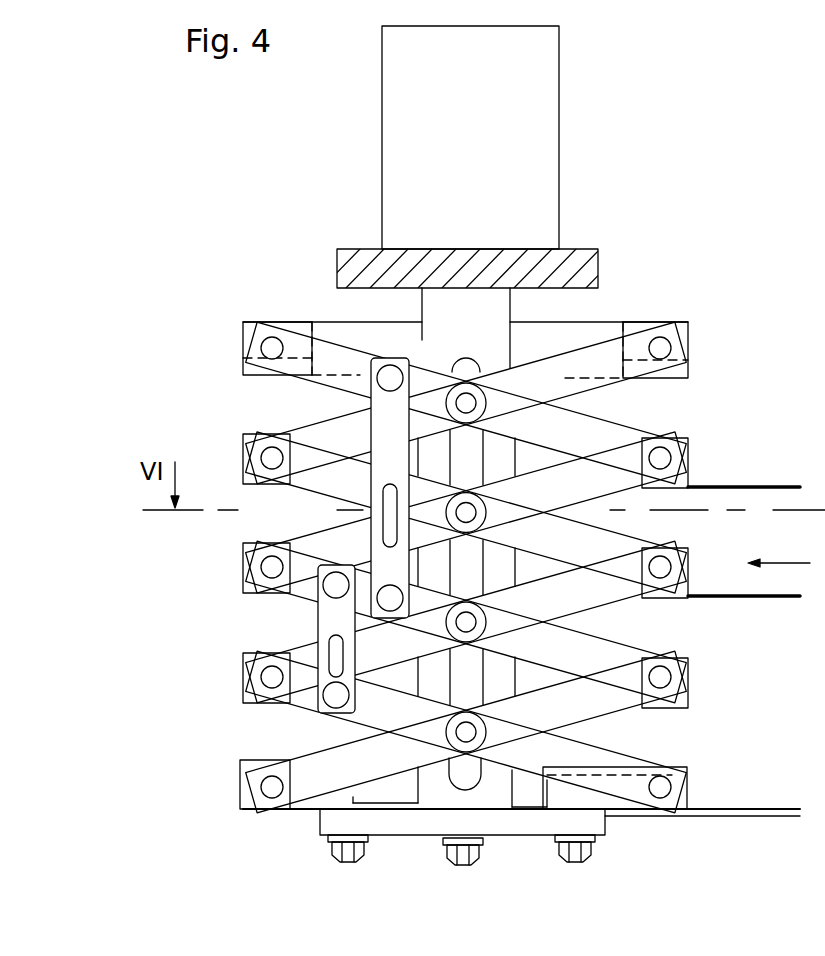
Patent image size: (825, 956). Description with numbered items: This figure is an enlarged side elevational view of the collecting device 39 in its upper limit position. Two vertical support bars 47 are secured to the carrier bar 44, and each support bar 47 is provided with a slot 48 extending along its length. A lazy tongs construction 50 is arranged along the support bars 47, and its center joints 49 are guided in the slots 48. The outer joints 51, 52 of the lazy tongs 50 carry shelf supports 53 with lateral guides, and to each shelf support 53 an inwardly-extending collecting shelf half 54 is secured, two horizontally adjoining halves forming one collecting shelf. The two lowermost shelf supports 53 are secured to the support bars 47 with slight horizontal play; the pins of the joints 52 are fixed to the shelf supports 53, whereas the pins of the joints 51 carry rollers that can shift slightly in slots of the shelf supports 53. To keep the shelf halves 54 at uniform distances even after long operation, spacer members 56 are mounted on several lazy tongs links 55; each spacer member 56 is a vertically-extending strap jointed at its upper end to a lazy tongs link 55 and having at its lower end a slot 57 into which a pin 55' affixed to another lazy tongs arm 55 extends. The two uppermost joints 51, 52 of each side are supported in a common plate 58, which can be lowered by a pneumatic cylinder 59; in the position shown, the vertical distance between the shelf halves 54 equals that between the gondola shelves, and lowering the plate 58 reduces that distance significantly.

The collecting device 39 is at (238, 185).
The pneumatic cylinder 59 is at (398, 64).
The carrier bar 44 is at (356, 258).
The vertical support bar 47 is at (483, 328).
The slot 48 is at (478, 370).
The common plate 58 is at (356, 334).
The collecting shelf half 54 is at (777, 484).
The spacer member 56 is at (387, 470).
The slot 57 is at (388, 497).
The pin 55' is at (306, 654).
The lazy tongs link 55 is at (466, 775).
The center joint 49 is at (460, 734).
The outer joint 52 is at (270, 798).
The outer joint 51 is at (659, 798).
The shelf support 53 is at (335, 797).
The lazy tongs construction 50 is at (224, 834).